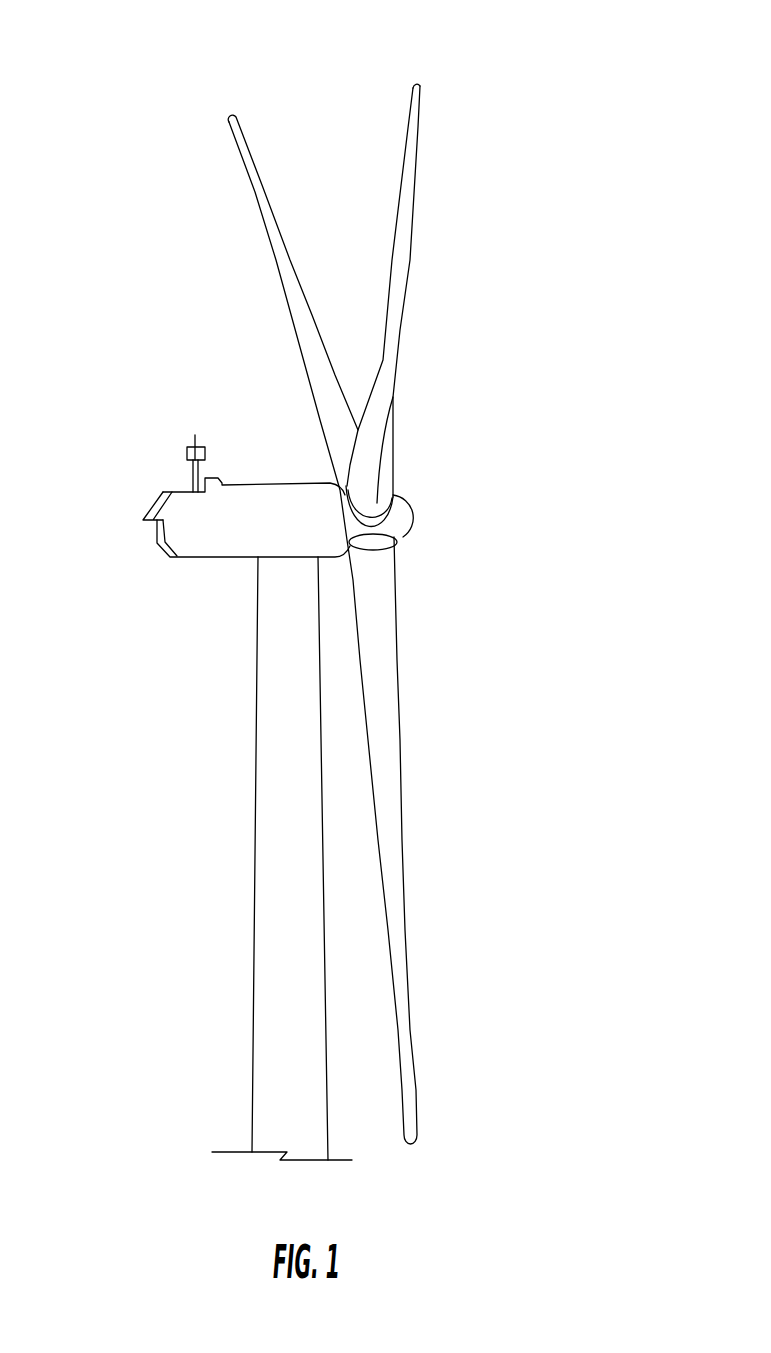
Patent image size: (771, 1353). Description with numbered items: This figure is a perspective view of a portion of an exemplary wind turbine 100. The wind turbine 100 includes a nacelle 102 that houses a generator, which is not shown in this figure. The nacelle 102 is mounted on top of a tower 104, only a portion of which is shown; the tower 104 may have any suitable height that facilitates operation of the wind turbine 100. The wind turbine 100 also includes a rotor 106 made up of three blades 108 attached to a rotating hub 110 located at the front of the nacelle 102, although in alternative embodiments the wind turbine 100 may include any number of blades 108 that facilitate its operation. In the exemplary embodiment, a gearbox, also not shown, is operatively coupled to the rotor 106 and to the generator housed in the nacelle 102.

The wind turbine 100 is at (145, 88).
The nacelle 102 is at (202, 558).
The tower 104 is at (255, 833).
The rotor 106 is at (470, 230).
The blades 108 is at (277, 222).
The rotating hub 110 is at (412, 528).